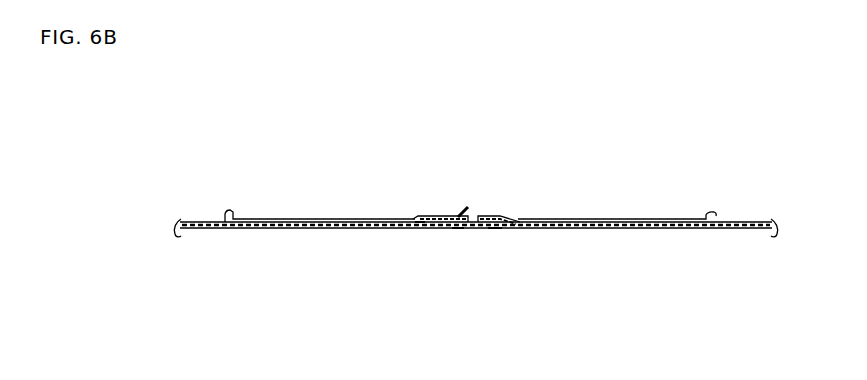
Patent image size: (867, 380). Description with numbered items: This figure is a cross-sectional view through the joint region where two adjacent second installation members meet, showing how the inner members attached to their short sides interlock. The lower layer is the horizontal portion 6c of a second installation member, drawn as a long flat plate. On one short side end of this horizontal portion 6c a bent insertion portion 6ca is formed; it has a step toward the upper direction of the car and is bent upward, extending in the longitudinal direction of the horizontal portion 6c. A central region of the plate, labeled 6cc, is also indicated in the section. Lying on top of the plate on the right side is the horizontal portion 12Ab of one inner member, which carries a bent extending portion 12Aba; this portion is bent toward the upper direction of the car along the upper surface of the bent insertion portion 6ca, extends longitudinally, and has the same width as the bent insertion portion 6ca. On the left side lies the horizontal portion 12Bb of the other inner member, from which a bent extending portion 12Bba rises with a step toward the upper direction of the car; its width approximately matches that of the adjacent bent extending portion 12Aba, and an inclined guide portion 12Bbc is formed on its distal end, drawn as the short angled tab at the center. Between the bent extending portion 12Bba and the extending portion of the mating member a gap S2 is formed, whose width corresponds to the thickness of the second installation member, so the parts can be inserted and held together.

The horizontal portion 6c is at (205, 232).
The bent insertion portion 6ca is at (494, 229).
The bottom plate center portion 6cc is at (458, 229).
The horizontal portion 12Ab is at (663, 219).
The bent extending portion 12Aba is at (502, 218).
The horizontal portion 12Bb is at (322, 219).
The bent extending portion 12Bba is at (430, 217).
The inclined guide portion 12Bbc is at (455, 216).
The gap S2 is at (423, 232).